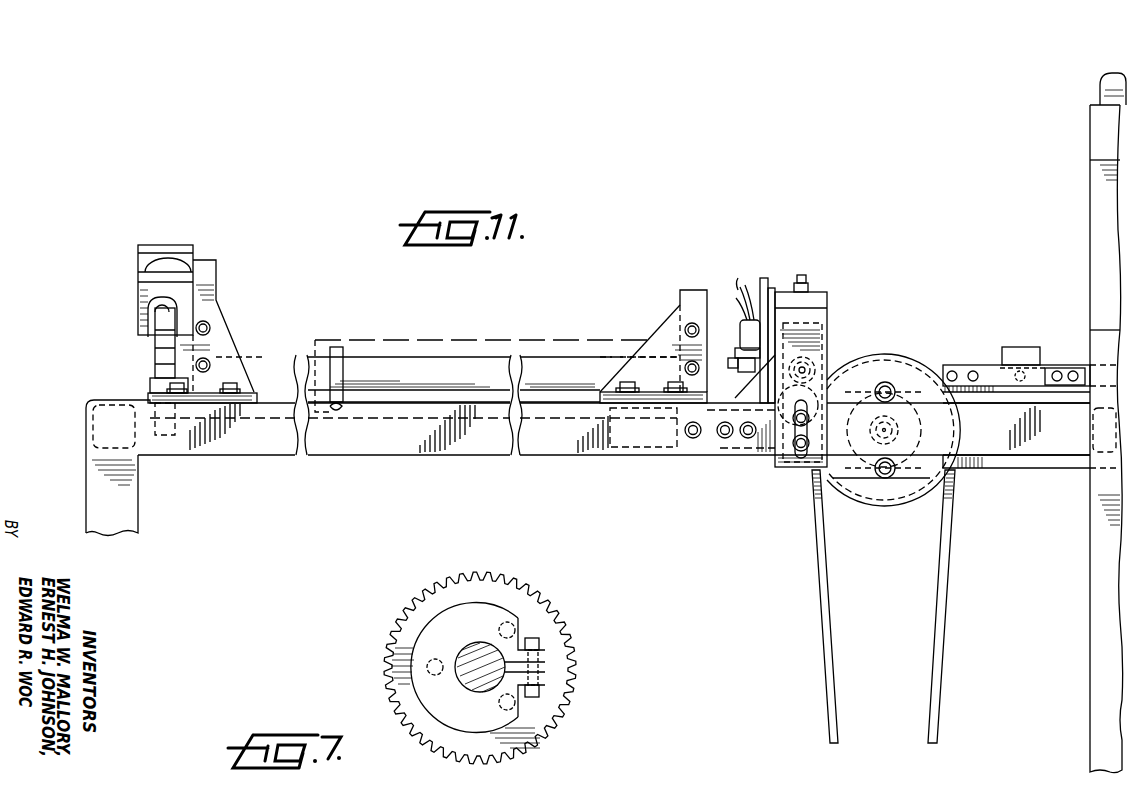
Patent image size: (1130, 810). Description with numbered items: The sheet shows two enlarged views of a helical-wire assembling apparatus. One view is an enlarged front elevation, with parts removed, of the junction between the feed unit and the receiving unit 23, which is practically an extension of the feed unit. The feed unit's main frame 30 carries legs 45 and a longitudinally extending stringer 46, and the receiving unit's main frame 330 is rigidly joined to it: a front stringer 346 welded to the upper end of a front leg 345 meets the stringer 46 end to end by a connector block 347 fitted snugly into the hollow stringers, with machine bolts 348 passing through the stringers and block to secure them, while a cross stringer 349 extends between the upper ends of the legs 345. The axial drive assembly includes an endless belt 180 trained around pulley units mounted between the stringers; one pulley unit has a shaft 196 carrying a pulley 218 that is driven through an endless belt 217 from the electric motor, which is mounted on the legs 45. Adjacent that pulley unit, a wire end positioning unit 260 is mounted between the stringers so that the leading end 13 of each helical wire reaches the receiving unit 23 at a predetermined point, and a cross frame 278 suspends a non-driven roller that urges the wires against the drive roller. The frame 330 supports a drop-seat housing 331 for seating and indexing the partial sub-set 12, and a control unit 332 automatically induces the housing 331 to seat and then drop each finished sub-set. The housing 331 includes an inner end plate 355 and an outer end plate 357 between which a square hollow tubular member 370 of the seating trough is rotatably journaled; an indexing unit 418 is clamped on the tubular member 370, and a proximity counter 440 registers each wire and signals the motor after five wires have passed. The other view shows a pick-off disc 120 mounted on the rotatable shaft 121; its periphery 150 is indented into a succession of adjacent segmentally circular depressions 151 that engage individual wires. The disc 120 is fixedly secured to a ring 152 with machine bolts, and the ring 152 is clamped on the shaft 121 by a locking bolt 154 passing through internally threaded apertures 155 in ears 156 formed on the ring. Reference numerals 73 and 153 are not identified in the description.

In FIG. 11, the partial sub-set 12 is at (62, 485).
In FIG. 11, the leading end 13 is at (652, 340).
In FIG. 11, the receiving unit 23 is at (641, 334).
In FIG. 11, the main frame 30 is at (1000, 405).
In FIG. 11, the legs 45 is at (1093, 578).
In FIG. 11, the stringer 46 is at (990, 460).
In FIG. 11, the post upper section 73 is at (1096, 152).
In FIG. 7, the pick-off disc 120 is at (550, 630).
In FIG. 7, the rotatable shaft 121 is at (465, 650).
In FIG. 7, the periphery 150 is at (515, 583).
In FIG. 7, the segmentally circular depressions 151 is at (530, 596).
In FIG. 7, the ring 152 is at (400, 692).
In FIG. 7, the mounting holes 153 is at (430, 660).
In FIG. 7, the locking bolt 154 is at (540, 644).
In FIG. 7, the internally threaded apertures 155 is at (545, 684).
In FIG. 7, the ears 156 is at (545, 657).
In FIG. 11, the endless belt 180 is at (1030, 385).
In FIG. 11, the shaft 196 is at (872, 460).
In FIG. 11, the endless belt 217 is at (945, 550).
In FIG. 11, the pulley 218 is at (900, 357).
In FIG. 11, the wire end positioning unit 260 is at (839, 330).
In FIG. 11, the cross frame 278 is at (818, 302).
In FIG. 11, the main frame 330 is at (229, 477).
In FIG. 11, the drop-seat housing 331 is at (437, 351).
In FIG. 11, the control unit 332 is at (205, 232).
In FIG. 11, the legs 345 is at (125, 500).
In FIG. 11, the front stringer 346 is at (405, 457).
In FIG. 11, the connector block 347 is at (614, 452).
In FIG. 11, the machine bolts 348 is at (688, 437).
In FIG. 11, the cross stringer 349 is at (118, 390).
In FIG. 11, the inner end plate 355 is at (695, 290).
In FIG. 11, the outer end plate 357 is at (212, 290).
In FIG. 11, the tubular member 370 is at (505, 352).
In FIG. 11, the indexing unit 418 is at (339, 344).
In FIG. 11, the proximity counter 440 is at (752, 320).